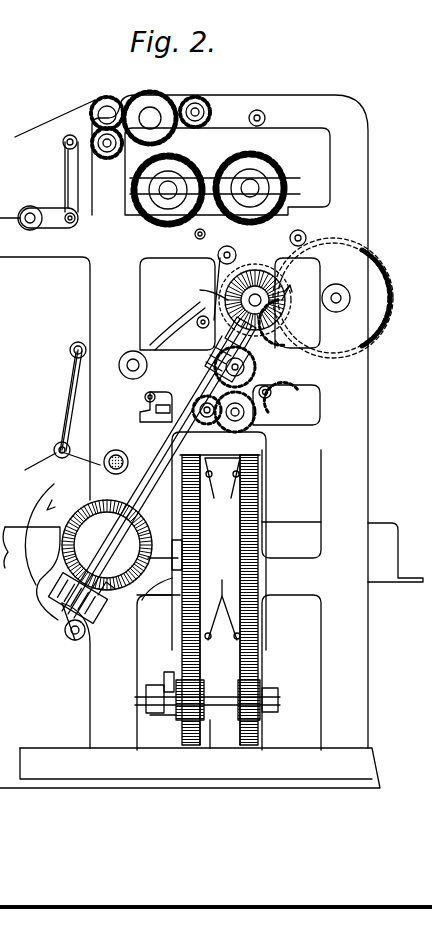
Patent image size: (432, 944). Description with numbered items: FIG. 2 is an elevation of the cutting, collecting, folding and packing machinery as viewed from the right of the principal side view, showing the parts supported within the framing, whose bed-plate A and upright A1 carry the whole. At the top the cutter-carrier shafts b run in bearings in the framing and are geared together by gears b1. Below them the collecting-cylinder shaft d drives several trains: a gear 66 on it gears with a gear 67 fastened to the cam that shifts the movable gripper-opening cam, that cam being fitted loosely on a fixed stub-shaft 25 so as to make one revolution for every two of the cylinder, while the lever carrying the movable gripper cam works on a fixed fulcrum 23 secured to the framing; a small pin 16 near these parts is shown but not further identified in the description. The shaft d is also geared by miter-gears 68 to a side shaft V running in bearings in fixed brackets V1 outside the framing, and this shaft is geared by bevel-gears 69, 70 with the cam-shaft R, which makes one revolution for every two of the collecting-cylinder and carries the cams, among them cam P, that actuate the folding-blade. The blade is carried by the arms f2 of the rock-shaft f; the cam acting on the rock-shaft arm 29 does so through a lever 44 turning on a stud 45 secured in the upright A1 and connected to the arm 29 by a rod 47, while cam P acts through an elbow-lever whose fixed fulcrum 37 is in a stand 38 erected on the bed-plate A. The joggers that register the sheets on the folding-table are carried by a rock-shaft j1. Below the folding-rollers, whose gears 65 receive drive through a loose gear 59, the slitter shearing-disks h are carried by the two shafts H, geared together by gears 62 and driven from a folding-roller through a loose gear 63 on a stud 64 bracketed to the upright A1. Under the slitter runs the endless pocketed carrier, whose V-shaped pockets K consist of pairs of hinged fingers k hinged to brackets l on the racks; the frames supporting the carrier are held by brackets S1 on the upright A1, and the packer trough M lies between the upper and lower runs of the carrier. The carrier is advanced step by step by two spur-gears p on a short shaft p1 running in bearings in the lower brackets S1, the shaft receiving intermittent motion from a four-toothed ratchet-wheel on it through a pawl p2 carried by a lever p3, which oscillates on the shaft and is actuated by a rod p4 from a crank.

The bed-plate of the framing A is at (190, 768).
The upright of the framing A1 is at (80, 310).
The cutter-carrier shaft b is at (150, 212).
The cutter-shaft gears b1 is at (262, 160).
The rock-shaft arm 29 is at (72, 356).
The rod 47 is at (68, 395).
The lever 44 is at (56, 513).
The stud 45 is at (116, 474).
The rock-shaft f is at (128, 376).
The rock-shaft arms f2 is at (179, 326).
The jogger rock-shaft j1 is at (145, 397).
The collecting-cylinder shaft d is at (256, 294).
The side shaft V is at (162, 437).
The fixed brackets V1 is at (68, 606).
The bevel-gear 69 is at (103, 600).
The cam-shaft R is at (107, 545).
The bevel-gear 70 is at (150, 555).
The cam P is at (40, 585).
The fixed fulcrum 37 is at (82, 633).
The stand 38 is at (90, 684).
The folding-roller gears 65 is at (223, 367).
The slitter-shaft gears 62 is at (222, 420).
The loose gear 63 is at (287, 400).
The stud 64 is at (270, 391).
The loose gear 59 is at (321, 398).
The gear 66 is at (218, 293).
The gear 67 is at (284, 315).
The miter-gears 68 is at (301, 327).
The pin 16 is at (222, 250).
The fixed fulcrum 23 is at (304, 240).
The fixed stub-shaft 25 is at (333, 298).
The slitter shafts H is at (201, 541).
The pocket K is at (222, 563).
The hinged side members k is at (231, 501).
The brackets l is at (273, 489).
The brackets S1 is at (226, 600).
The packing box or trough M is at (296, 541).
The shearing-disks h is at (215, 595).
The spur-gears p is at (232, 745).
The short horizontal shaft p1 is at (228, 710).
The pawl p2 is at (145, 695).
The lever p3 is at (166, 685).
The rod p4 is at (178, 602).